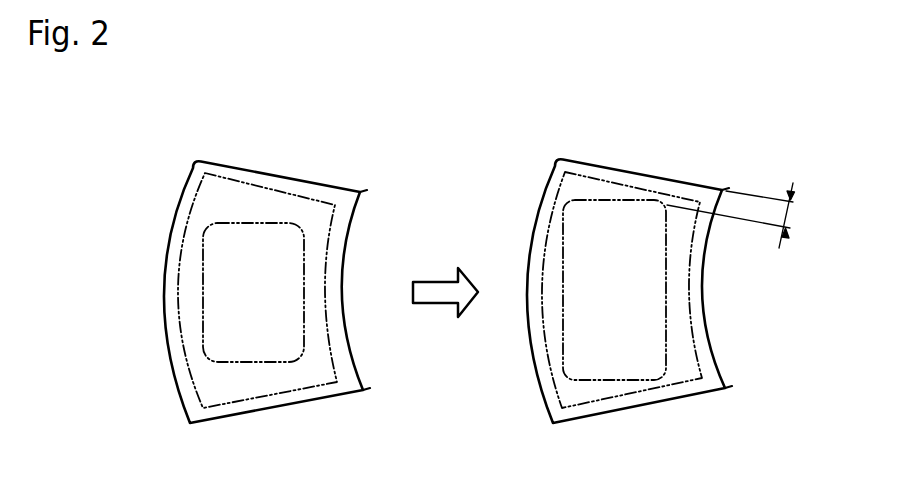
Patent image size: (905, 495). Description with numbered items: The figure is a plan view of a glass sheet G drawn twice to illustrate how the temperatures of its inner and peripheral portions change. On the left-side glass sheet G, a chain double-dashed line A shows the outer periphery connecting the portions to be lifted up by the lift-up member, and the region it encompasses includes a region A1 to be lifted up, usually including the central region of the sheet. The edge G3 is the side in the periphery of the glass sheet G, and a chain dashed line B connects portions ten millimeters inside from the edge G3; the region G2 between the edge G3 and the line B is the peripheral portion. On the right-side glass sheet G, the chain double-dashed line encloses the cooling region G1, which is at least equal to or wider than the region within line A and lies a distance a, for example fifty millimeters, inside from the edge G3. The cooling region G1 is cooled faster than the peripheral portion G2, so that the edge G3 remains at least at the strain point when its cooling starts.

The glass sheet G is at (208, 200).
The cooling region G1 is at (612, 350).
The peripheral portion G2 is at (262, 184).
The edge of the glass sheet G3 is at (332, 187).
The chain double-dashed line A is at (297, 223).
The region to be lifted up A1 is at (253, 325).
The chain dashed line B is at (217, 178).
The distance inside from the edge a is at (736, 215).